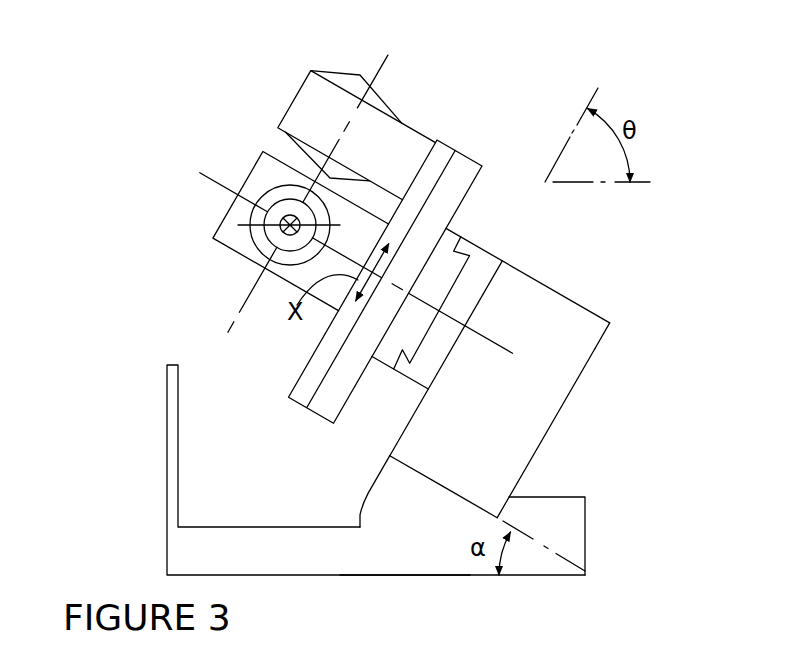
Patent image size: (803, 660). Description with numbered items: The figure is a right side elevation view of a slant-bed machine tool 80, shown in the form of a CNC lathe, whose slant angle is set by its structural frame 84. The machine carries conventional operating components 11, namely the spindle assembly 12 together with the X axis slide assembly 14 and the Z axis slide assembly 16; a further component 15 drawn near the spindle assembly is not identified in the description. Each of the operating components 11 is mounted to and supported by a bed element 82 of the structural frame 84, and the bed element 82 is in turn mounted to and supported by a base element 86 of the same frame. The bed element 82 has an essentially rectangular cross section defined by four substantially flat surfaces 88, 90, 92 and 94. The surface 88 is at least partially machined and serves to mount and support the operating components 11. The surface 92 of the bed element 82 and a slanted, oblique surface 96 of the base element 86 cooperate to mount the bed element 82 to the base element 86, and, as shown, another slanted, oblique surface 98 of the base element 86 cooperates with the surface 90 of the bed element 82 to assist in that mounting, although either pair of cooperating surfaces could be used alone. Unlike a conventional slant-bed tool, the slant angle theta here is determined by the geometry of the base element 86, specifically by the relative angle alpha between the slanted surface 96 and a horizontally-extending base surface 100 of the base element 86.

The operating components 11 is at (171, 131).
The spindle assembly 12 is at (261, 168).
The X axis slide assembly 14 is at (458, 160).
The pivot nut 15 is at (319, 76).
The Z axis slide assembly 16 is at (482, 262).
The slant-bed machine tool 80 is at (478, 48).
The bed element 82 is at (600, 328).
The structural frame 84 is at (165, 443).
The base element 86 is at (572, 518).
The surface 88 is at (410, 413).
The surface 90 is at (560, 408).
The surface 92 is at (405, 467).
The surface 94 is at (550, 287).
The slanted, oblique surface 96 is at (422, 473).
The slanted, oblique surface 98 is at (500, 512).
The base surface 100 is at (409, 575).